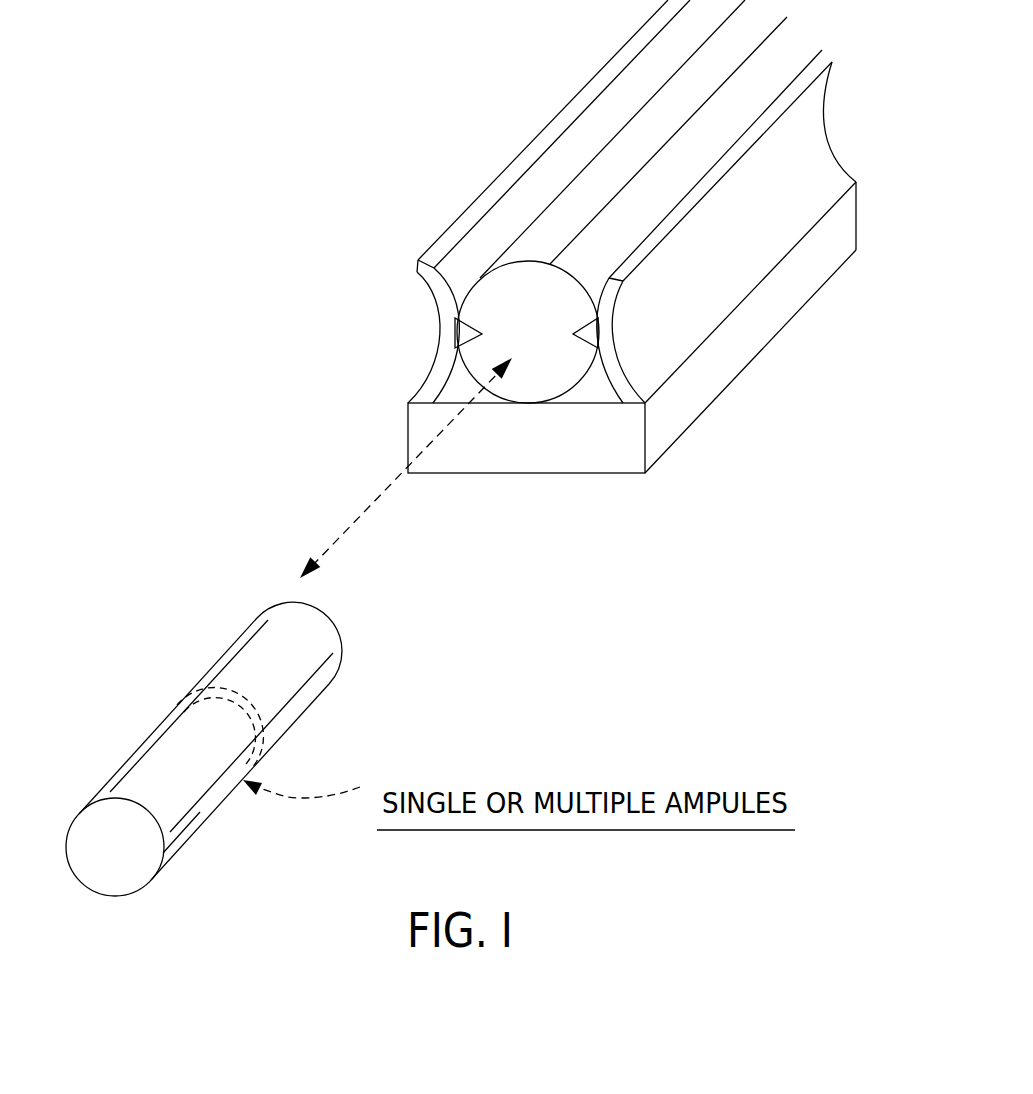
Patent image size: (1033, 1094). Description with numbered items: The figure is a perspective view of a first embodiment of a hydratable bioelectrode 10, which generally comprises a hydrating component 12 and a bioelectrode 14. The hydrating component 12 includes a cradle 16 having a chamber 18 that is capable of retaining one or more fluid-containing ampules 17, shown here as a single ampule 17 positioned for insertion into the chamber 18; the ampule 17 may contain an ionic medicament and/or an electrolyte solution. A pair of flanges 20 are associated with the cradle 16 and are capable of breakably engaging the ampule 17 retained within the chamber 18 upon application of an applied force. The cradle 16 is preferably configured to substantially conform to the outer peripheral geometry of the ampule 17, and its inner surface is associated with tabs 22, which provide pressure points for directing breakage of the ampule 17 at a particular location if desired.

The hydratable bioelectrode 10 is at (515, 81).
The hydrating component 12 is at (370, 262).
The bioelectrode 14 is at (375, 413).
The cradle 16 is at (492, 400).
The ampule 17 is at (213, 667).
The chamber 18 is at (541, 346).
The flanges 20 is at (619, 139).
The tabs 22 is at (455, 332).